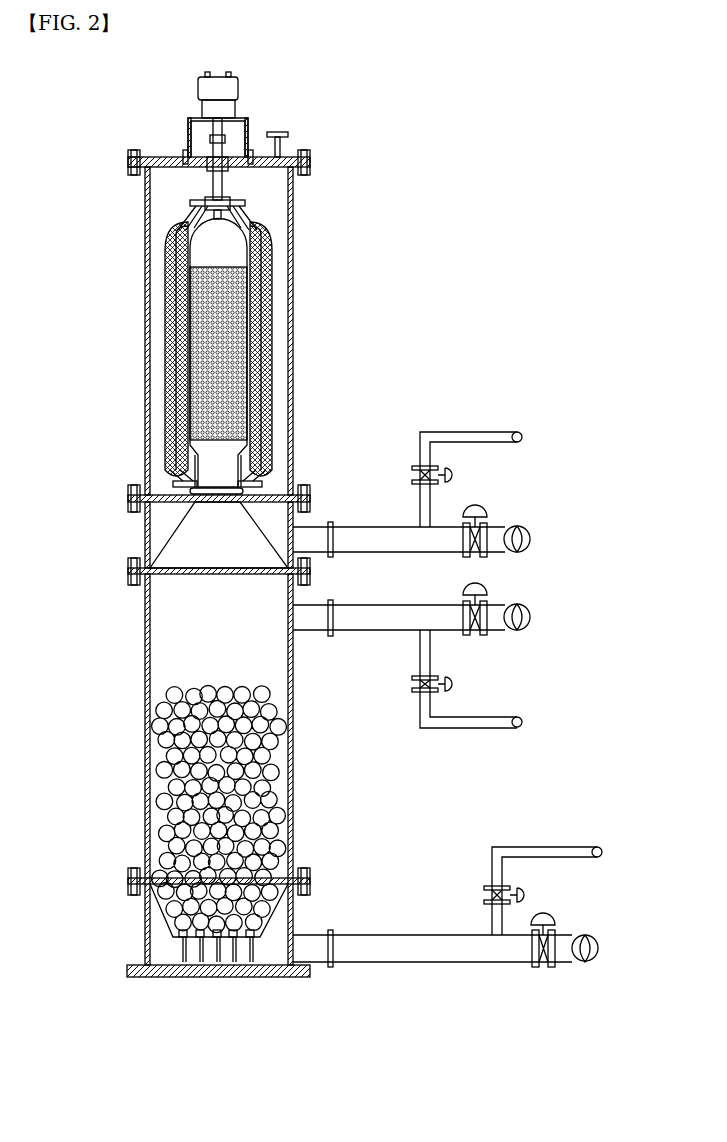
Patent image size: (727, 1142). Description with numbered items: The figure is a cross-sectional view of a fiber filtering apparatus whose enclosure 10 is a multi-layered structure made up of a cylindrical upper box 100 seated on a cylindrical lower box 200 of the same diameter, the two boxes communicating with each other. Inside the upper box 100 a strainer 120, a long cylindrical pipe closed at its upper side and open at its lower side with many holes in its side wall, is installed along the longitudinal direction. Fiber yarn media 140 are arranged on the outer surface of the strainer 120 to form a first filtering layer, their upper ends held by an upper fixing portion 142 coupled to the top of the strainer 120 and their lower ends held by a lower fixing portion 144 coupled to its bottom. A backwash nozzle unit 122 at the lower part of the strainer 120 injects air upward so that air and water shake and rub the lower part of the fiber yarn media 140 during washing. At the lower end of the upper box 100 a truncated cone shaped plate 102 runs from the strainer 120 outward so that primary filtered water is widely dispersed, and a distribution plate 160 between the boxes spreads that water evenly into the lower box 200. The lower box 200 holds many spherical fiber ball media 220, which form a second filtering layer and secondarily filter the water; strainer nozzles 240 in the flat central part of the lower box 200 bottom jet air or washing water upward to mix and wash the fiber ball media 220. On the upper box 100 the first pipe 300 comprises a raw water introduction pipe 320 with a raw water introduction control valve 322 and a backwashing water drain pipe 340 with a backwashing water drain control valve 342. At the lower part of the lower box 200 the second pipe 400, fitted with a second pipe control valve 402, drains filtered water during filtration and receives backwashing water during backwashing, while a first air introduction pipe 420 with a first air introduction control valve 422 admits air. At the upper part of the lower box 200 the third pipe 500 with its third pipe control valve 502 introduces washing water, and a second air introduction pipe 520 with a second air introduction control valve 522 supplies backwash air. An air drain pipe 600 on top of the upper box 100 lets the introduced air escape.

The enclosure 10 is at (62, 331).
The upper box 100 is at (145, 330).
The truncated cone shaped plate 102 is at (148, 520).
The strainer 120 is at (233, 245).
The backwash nozzle unit 122 is at (248, 492).
The fiber yarn media 140 is at (272, 312).
The upper fixing portion 142 is at (250, 208).
The lower fixing portion 144 is at (263, 483).
The distribution plate 160 is at (216, 574).
The lower box 200 is at (145, 684).
The fiber ball media 220 is at (280, 759).
The strainer nozzles 240 is at (253, 950).
The first pipe 300 is at (560, 405).
The raw water introduction pipe 320 is at (498, 527).
The raw water introduction control valve 322 is at (487, 557).
The backwashing water drain pipe 340 is at (480, 432).
The backwashing water drain control valve 342 is at (412, 475).
The second pipe 400 is at (430, 962).
The second pipe control valve 402 is at (548, 967).
The first air introduction pipe 420 is at (538, 847).
The first air introduction control valve 422 is at (484, 888).
The third pipe 500 is at (403, 612).
The third pipe control valve 502 is at (487, 637).
The second air introduction pipe 520 is at (465, 728).
The second air introduction control valve 522 is at (412, 680).
The air drain pipe 600 is at (278, 130).